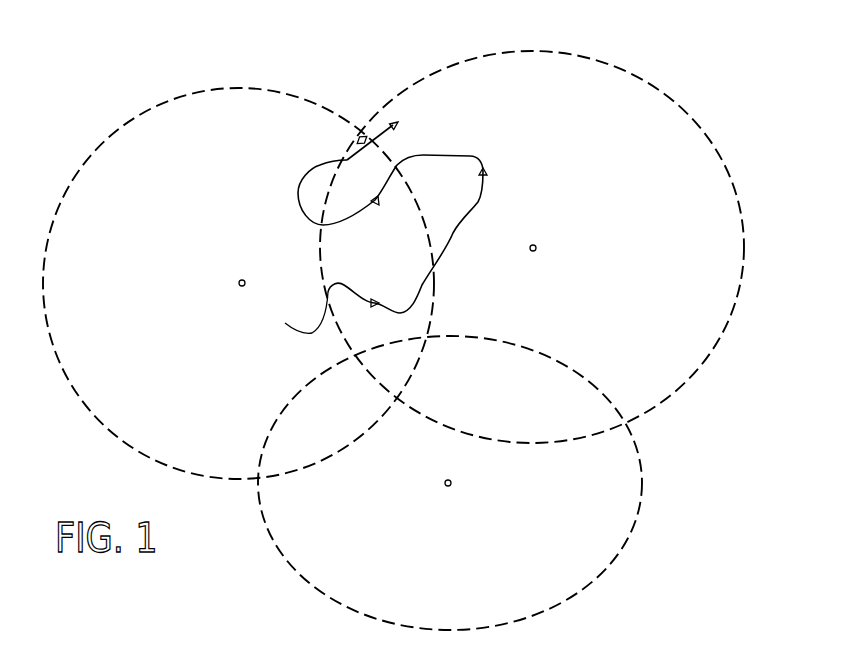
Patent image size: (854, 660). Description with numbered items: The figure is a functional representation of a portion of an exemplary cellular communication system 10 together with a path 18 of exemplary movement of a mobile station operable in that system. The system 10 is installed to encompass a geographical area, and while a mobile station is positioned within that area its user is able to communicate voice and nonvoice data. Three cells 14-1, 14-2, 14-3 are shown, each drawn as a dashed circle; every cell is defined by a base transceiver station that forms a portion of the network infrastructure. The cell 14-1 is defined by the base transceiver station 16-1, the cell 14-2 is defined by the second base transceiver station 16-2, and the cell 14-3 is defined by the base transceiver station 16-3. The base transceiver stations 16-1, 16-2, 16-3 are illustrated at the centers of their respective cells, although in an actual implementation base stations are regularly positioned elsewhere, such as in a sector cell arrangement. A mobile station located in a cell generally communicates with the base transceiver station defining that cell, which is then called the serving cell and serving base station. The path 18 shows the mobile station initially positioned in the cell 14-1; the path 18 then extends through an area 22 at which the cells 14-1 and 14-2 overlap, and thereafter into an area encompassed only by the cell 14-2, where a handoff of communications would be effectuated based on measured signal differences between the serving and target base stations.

The cellular communication system 10 is at (723, 50).
The cell 14-1 is at (254, 89).
The cell 14-2 is at (542, 52).
The cell 14-3 is at (640, 505).
The base transceiver station 16-1 is at (239, 284).
The second base transceiver station 16-2 is at (536, 248).
The base transceiver station 16-3 is at (451, 483).
The path 18 is at (483, 200).
The area 22 is at (356, 140).